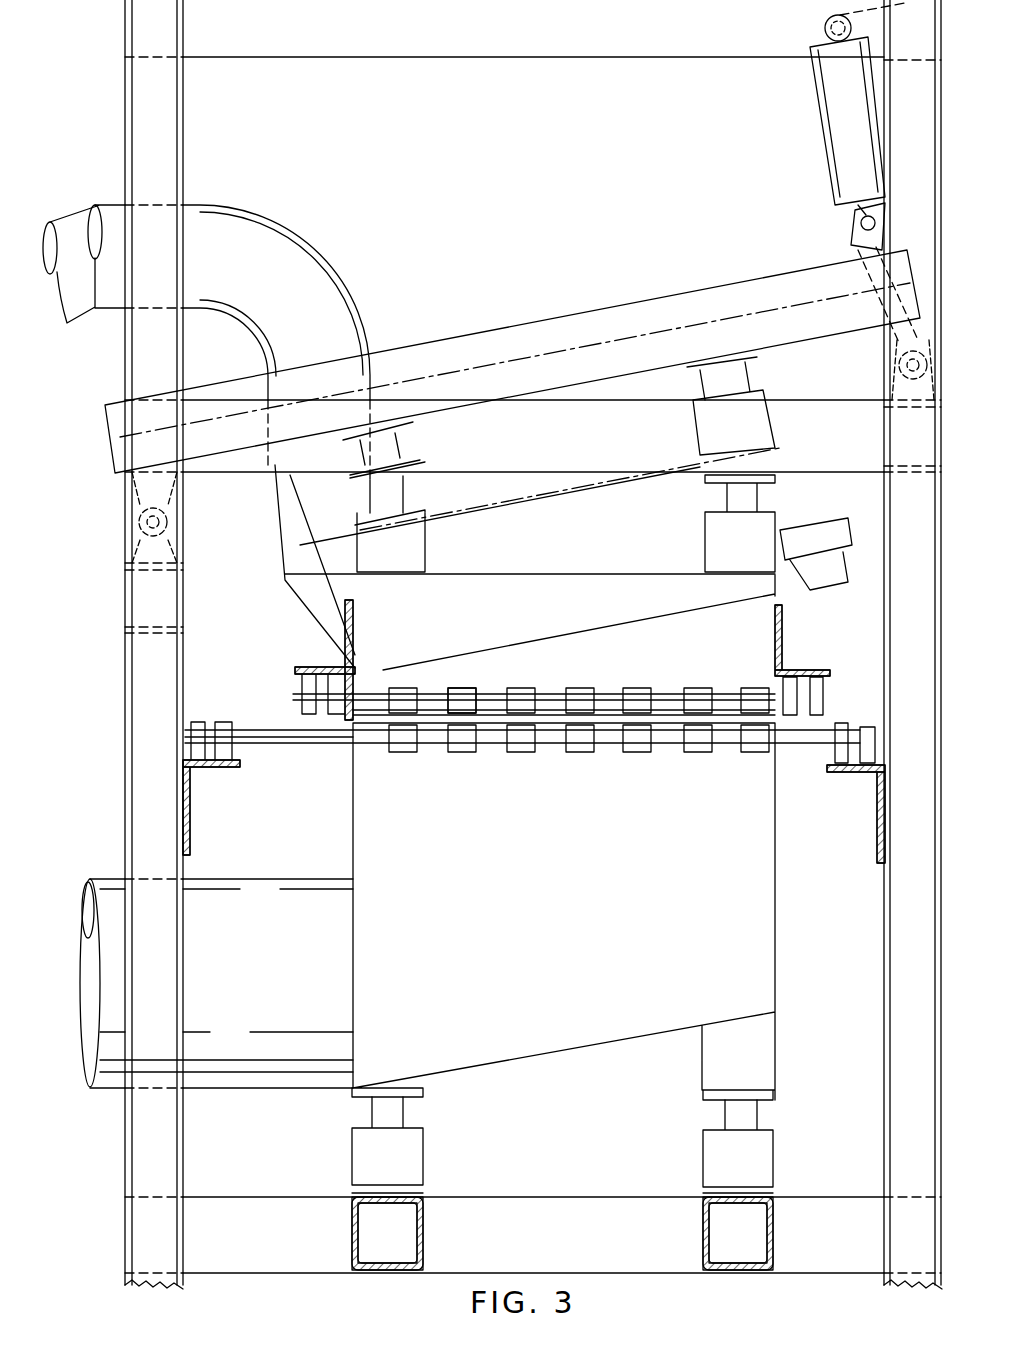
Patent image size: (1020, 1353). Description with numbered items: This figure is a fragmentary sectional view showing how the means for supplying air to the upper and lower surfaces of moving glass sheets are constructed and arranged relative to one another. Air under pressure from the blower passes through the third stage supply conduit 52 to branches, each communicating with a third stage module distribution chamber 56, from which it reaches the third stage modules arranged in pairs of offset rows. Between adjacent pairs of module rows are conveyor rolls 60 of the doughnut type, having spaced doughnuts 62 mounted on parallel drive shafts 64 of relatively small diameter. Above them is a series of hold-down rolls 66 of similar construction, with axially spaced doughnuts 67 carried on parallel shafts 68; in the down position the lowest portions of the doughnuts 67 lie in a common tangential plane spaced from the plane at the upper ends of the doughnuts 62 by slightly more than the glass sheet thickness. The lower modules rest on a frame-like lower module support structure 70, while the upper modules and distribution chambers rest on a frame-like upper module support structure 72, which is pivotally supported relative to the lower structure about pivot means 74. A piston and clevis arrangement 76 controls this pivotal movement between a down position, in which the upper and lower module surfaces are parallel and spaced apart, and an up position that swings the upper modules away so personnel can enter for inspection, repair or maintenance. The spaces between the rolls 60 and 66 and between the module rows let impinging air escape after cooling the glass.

The third stage supply conduit 52 is at (208, 205).
The third stage module distribution chamber 56 is at (624, 670).
The conveyor roll 60 is at (582, 762).
The doughnut 62 is at (697, 752).
The drive shaft 64 is at (792, 745).
The hold-down roll 66 is at (707, 678).
The doughnut 67 is at (460, 688).
The shaft 68 is at (548, 690).
The lower module support structure 70 is at (425, 1145).
The upper module support structure 72 is at (458, 340).
The pivot means 74 is at (170, 522).
The piston and clevis arrangement 76 is at (835, 115).